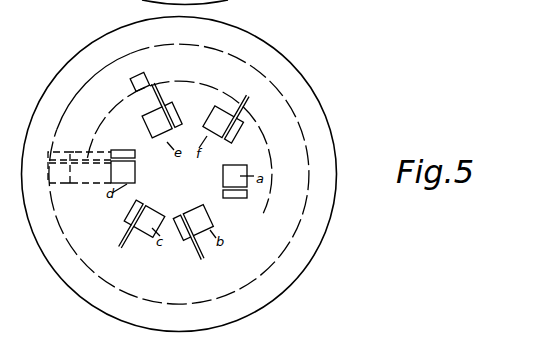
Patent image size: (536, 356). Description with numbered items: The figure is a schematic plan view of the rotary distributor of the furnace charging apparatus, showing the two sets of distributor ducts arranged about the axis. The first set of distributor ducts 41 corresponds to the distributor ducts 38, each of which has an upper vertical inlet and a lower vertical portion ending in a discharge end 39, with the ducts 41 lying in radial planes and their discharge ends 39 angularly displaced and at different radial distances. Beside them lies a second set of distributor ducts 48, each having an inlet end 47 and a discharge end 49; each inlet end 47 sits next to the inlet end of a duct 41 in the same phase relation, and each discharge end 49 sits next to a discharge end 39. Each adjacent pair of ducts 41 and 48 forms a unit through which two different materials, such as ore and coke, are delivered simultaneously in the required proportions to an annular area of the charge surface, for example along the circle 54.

The distributor duct 38 is at (213, 126).
The discharge end 39 is at (122, 85).
The distributor duct 41 is at (140, 105).
The inlet end 47 is at (173, 116).
The distributor duct 48 is at (162, 92).
The discharge end 49 is at (146, 74).
The circle 54 is at (272, 169).